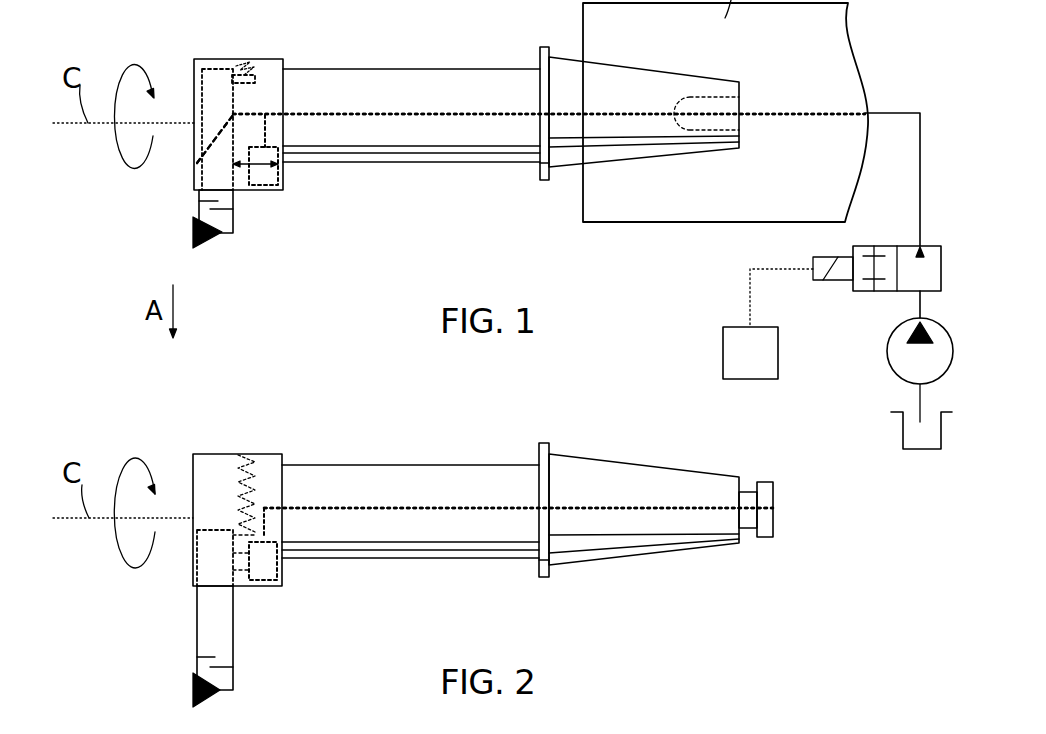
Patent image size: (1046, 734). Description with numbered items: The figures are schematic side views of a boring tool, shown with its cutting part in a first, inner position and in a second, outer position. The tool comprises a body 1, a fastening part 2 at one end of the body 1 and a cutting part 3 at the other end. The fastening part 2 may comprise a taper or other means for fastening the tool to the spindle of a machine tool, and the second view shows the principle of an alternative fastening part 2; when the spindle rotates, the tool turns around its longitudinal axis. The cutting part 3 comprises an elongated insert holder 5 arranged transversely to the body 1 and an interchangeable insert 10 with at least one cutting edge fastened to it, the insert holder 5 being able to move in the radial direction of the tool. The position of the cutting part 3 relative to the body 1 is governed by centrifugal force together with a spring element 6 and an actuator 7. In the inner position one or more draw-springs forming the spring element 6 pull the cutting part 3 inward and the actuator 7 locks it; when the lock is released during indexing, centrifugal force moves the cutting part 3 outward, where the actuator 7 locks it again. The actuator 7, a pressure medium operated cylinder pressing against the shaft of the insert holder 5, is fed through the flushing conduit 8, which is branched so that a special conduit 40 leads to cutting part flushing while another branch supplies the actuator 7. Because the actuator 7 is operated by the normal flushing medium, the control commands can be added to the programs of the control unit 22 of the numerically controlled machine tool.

In FIG. 1, the body 1 is at (362, 80).
In FIG. 2, the body 1 is at (351, 475).
In FIG. 1, the fastening part 2 is at (723, 60).
In FIG. 2, the fastening part 2 is at (681, 442).
In FIG. 1, the cutting part 3 is at (158, 216).
In FIG. 2, the cutting part 3 is at (154, 636).
In FIG. 1, the insert holder 5 is at (222, 218).
In FIG. 2, the insert holder 5 is at (210, 602).
In FIG. 1, the spring element 6 is at (244, 68).
In FIG. 2, the spring element 6 is at (253, 468).
In FIG. 1, the actuator 7 is at (265, 178).
In FIG. 2, the actuator 7 is at (265, 566).
In FIG. 1, the conduit 8 is at (447, 112).
In FIG. 2, the conduit 8 is at (432, 508).
In FIG. 1, the insert 10 is at (199, 247).
In FIG. 2, the insert 10 is at (193, 697).
In FIG. 1, the control unit 22 is at (750, 353).
In FIG. 1, the special conduit 40 is at (217, 137).